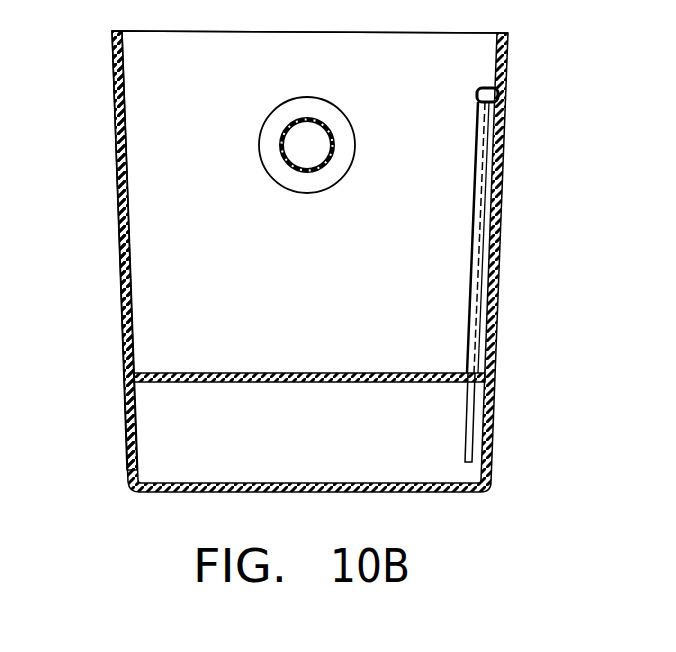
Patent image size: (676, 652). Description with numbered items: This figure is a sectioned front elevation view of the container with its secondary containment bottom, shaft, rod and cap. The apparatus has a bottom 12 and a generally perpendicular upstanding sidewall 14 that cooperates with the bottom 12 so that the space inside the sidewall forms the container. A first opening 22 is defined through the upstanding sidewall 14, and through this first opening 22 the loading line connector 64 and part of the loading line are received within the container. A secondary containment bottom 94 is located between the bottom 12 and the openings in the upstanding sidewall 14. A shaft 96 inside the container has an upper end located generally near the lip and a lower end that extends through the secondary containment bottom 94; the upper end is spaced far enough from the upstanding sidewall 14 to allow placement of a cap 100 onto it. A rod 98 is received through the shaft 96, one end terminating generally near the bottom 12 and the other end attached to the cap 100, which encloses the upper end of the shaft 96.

The bottom 12 is at (318, 485).
The upstanding sidewall 14 is at (118, 185).
The first opening 22 is at (336, 104).
The loading line connector 64 is at (333, 150).
The secondary containment bottom 94 is at (275, 375).
The shaft 96 is at (490, 194).
The rod 98 is at (470, 418).
The cap 100 is at (497, 85).